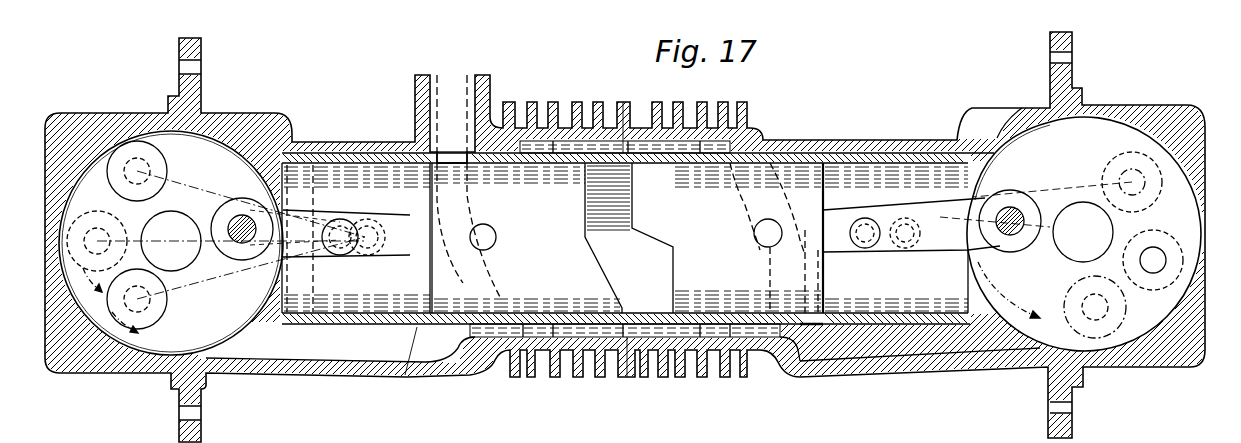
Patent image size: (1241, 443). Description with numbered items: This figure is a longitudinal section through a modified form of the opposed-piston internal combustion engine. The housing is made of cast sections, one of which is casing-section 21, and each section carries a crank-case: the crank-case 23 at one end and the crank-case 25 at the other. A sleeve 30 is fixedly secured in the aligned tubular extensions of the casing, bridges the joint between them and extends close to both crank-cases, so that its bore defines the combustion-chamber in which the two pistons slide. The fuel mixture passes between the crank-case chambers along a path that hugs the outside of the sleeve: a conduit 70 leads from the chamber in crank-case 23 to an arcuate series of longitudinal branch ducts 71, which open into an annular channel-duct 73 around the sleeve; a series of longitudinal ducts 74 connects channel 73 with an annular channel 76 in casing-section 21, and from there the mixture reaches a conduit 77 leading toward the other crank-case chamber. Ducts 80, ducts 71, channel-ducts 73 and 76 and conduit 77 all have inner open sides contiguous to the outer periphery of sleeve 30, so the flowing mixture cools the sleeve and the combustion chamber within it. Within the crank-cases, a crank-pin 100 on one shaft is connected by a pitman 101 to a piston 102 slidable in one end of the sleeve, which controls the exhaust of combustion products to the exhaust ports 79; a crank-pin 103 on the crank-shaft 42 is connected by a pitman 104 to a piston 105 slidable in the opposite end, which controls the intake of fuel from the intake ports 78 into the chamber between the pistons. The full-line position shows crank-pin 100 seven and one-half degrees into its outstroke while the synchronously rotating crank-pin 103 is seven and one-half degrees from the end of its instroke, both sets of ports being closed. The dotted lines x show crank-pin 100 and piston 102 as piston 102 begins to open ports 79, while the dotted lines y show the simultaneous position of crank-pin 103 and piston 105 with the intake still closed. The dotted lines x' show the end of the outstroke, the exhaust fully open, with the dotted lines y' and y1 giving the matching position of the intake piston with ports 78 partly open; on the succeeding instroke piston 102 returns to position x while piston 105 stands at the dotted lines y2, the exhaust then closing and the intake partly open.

The casing-section 21 is at (904, 136).
The crank-case 23 is at (103, 120).
The crank-case 25 is at (1018, 118).
The sleeve 30 is at (405, 375).
The crank-shaft 42 is at (1083, 232).
The conduit 70 is at (372, 352).
The longitudinal branch ducts 71 is at (592, 332).
The annular channel-duct 73 is at (540, 337).
The longitudinal ducts 74 is at (653, 330).
The annular channel 76 is at (717, 330).
The conduit 77 is at (920, 345).
The intake ports 78 is at (805, 327).
The exhaust ports 79 is at (452, 153).
The ducts 80 is at (453, 83).
The crank-pin 100 is at (236, 223).
The pitman 101 is at (403, 248).
The piston 102 is at (552, 238).
The crank-pin 103 is at (1023, 217).
The pitman 104 is at (883, 212).
The piston 105 is at (749, 238).
The dotted lines x is at (308, 235).
The dotted lines x1 x' is at (560, 299).
The dotted lines y is at (915, 269).
The dotted lines y1 y' is at (1003, 233).
The dotted lines y1 is at (823, 272).
The dotted lines y2 is at (823, 295).